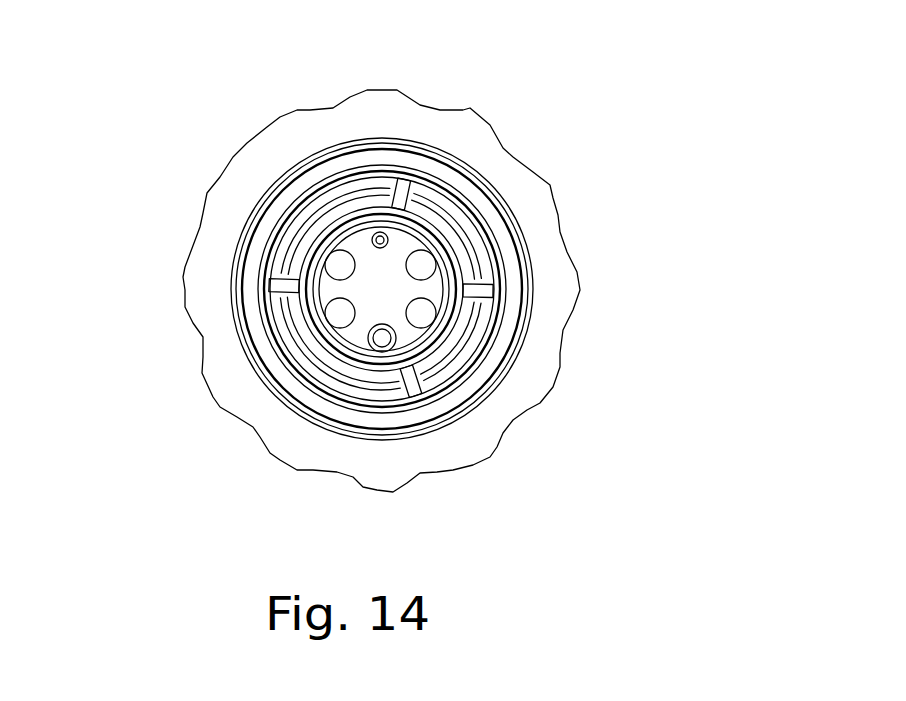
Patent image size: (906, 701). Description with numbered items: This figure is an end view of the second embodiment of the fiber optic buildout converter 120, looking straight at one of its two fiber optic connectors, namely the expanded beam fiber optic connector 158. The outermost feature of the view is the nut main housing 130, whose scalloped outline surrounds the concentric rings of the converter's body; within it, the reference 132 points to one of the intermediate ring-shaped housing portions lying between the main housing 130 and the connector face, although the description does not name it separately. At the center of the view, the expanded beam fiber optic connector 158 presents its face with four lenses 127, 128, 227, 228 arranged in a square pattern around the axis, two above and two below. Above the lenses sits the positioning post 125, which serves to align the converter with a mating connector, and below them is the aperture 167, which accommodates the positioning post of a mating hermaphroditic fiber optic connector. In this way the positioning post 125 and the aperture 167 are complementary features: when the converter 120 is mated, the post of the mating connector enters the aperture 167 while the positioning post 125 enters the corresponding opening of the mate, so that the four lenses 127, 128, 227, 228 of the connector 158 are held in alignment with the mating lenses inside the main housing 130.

The fiber optic buildout converter 120 is at (410, 268).
The nut main housing 130 is at (454, 291).
The housing 132 is at (481, 289).
The first fiber optic connector 158 is at (281, 238).
The positioning post 125 is at (406, 134).
The aperture 167 is at (471, 420).
The lens 227 is at (212, 313).
The lens 228 is at (563, 247).
The lens 127 is at (250, 398).
The lens 128 is at (578, 299).